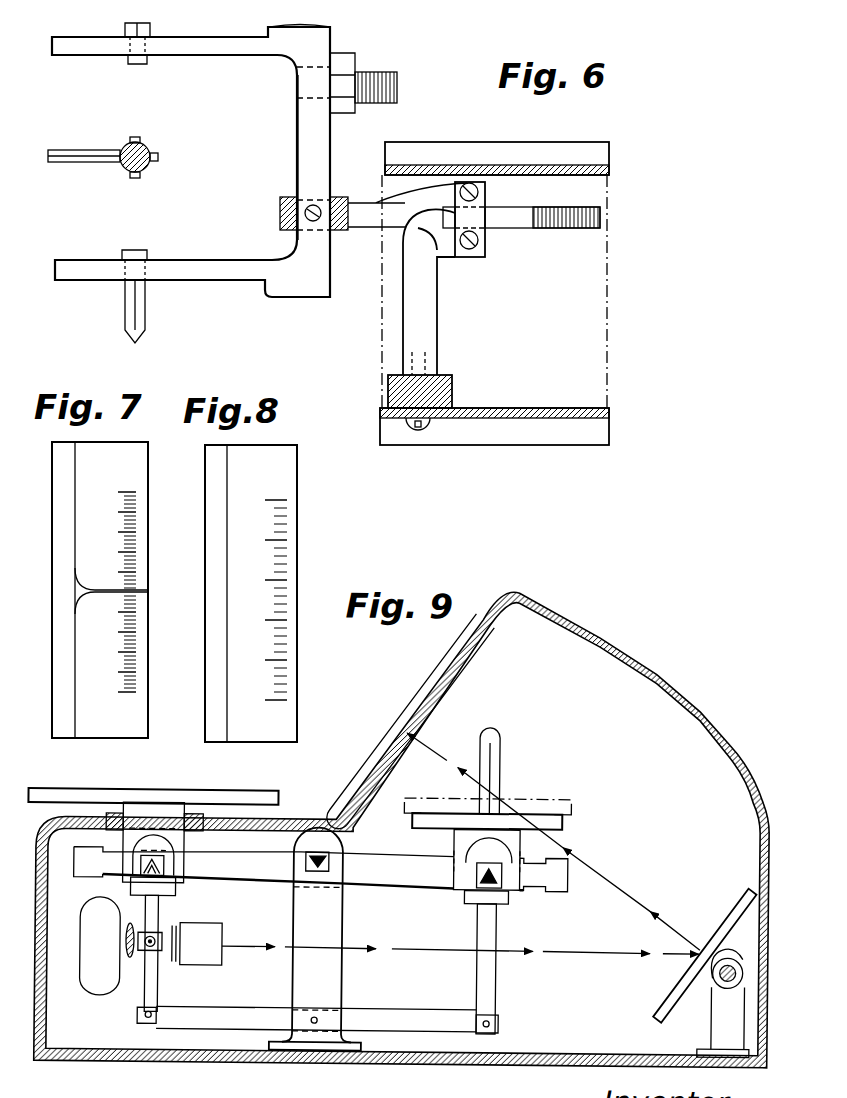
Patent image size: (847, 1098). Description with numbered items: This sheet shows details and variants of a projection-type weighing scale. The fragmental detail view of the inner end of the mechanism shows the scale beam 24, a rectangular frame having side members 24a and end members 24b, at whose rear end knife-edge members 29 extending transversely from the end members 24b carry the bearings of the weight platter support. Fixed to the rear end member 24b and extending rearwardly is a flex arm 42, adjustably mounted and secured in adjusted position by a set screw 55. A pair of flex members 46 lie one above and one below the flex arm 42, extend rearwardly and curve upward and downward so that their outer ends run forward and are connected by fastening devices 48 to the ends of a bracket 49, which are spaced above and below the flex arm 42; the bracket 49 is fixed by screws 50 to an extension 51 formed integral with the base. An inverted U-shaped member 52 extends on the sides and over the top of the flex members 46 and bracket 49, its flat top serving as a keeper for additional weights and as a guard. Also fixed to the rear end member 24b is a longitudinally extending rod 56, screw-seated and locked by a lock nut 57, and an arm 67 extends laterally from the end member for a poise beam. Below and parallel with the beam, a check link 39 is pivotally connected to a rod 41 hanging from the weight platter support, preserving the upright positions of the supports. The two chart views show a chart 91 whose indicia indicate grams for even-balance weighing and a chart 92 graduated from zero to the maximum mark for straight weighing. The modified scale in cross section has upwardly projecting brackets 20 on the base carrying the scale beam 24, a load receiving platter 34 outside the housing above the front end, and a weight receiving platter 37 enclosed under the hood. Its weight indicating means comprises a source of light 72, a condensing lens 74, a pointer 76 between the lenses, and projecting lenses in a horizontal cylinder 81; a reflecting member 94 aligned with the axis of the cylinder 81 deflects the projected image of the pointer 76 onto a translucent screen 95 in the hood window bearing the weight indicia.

In FIG. 6, the scale beam 24 is at (268, 318).
In FIG. 9, the scale beam 24 is at (402, 892).
In FIG. 6, the side members 24a is at (72, 57).
In FIG. 6, the end members 24b is at (300, 148).
In FIG. 6, the knife-edge members 29 is at (140, 63).
In FIG. 6, the check link 39 is at (72, 165).
In FIG. 6, the rod 41 is at (150, 170).
In FIG. 6, the set screw 55 is at (306, 207).
In FIG. 6, the flex arm 42 is at (372, 203).
In FIG. 6, the rod 56 is at (396, 73).
In FIG. 6, the lock nut 57 is at (328, 110).
In FIG. 6, the arm 67 is at (332, 28).
In FIG. 6, the inverted U-shaped member 52 is at (533, 165).
In FIG. 6, the fastening devices 48 is at (467, 182).
In FIG. 6, the flex members 46 is at (600, 218).
In FIG. 6, the bracket 49 is at (428, 330).
In FIG. 6, the extension 51 is at (383, 408).
In FIG. 6, the screws 50 is at (417, 428).
In FIG. 7, the chart 91 is at (62, 615).
In FIG. 8, the chart 92 is at (296, 548).
In FIG. 9, the load receiving platter 34 is at (156, 792).
In FIG. 9, the weight receiving platter 37 is at (557, 815).
In FIG. 9, the translucent screen 95 is at (418, 705).
In FIG. 9, the brackets 20 is at (342, 984).
In FIG. 9, the cylinder 81 is at (197, 944).
In FIG. 9, the condensing lens 74 is at (126, 935).
In FIG. 9, the source of light 72 is at (90, 981).
In FIG. 9, the pointer 76 is at (146, 958).
In FIG. 9, the reflecting member 94 is at (736, 895).